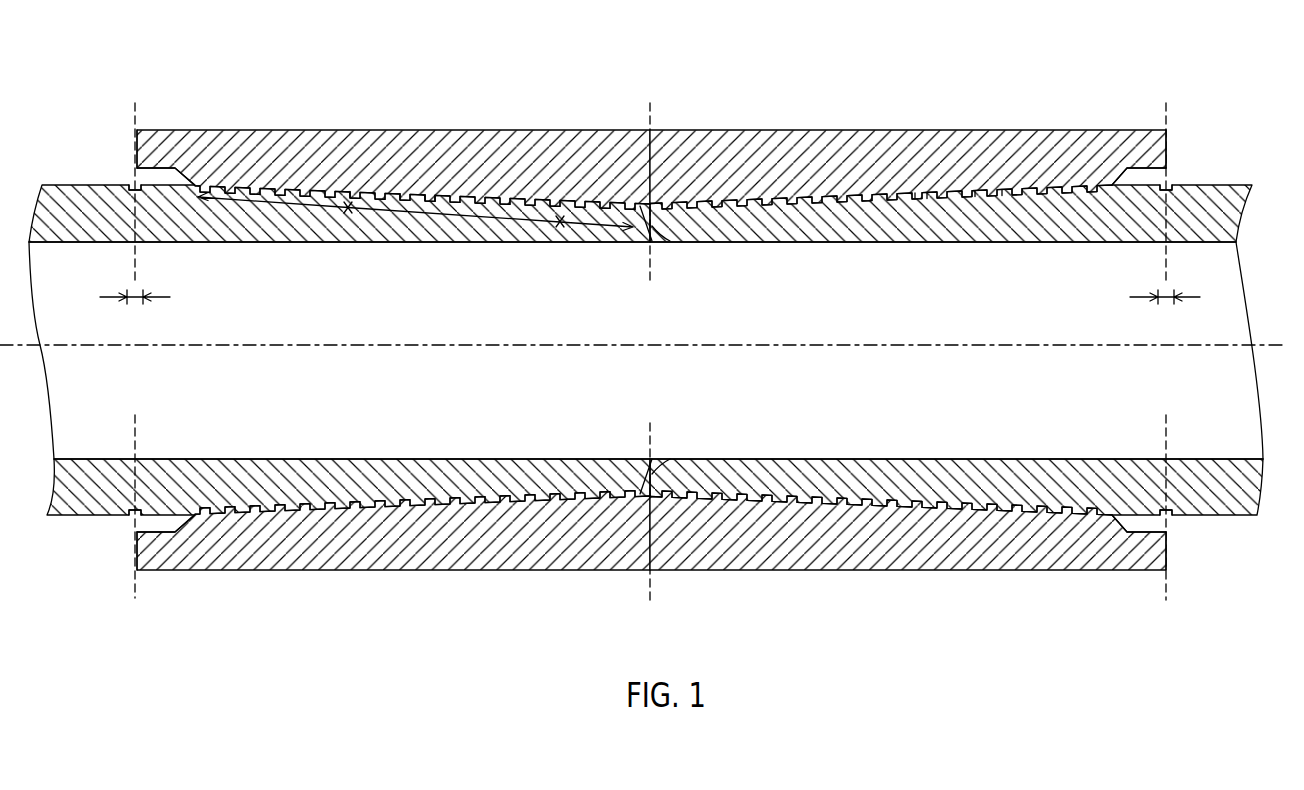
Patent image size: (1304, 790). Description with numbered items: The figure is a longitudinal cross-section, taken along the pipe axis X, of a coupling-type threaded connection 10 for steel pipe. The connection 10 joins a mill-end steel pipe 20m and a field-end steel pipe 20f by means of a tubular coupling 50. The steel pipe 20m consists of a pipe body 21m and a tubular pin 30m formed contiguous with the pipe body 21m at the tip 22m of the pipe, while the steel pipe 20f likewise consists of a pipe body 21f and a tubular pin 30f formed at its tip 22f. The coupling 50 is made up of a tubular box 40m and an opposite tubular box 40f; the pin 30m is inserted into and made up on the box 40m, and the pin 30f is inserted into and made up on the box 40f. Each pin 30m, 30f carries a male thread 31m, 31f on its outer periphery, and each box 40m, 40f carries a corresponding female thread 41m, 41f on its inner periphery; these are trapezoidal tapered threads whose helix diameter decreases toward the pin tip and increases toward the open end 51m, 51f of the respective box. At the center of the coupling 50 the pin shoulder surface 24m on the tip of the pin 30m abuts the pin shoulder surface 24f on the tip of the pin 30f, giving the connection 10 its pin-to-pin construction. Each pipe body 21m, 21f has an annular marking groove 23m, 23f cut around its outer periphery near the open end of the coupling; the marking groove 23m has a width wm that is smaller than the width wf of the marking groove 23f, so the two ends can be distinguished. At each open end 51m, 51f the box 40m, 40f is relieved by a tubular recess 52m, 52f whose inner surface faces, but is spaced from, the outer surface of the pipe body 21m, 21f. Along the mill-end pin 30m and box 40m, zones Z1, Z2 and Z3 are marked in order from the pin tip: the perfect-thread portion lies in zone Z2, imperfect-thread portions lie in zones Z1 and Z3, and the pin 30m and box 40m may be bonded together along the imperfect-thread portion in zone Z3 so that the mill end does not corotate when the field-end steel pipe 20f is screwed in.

The threaded connection 10 is at (650, 343).
The steel pipe 20m is at (360, 310).
The steel pipe 20f is at (947, 299).
The pipe body 21m is at (72, 222).
The pipe body 21f is at (1214, 222).
The tip of the steel pipe 22m is at (363, 412).
The tip of the steel pipe 22f is at (956, 412).
The marking groove 23m is at (133, 184).
The marking groove 23f is at (1172, 184).
The pin shoulder surface 24m is at (662, 236).
The pin shoulder surface 24f is at (640, 237).
The pin 30m is at (520, 243).
The pin 30f is at (950, 498).
The male thread 31m is at (413, 190).
The male thread 31f is at (1000, 190).
The box 40m is at (563, 148).
The box 40f is at (833, 140).
The female thread 41m is at (437, 201).
The female thread 41f is at (975, 197).
The coupling 50 is at (650, 343).
The open end of the box 51m is at (135, 163).
The open end of the box 51f is at (1170, 162).
The recess 52m is at (160, 176).
The recess 52f is at (1140, 176).
The zone Z1 is at (598, 229).
The zone Z2 is at (488, 220).
The zone Z3 is at (276, 207).
The width of the marking groove wm is at (135, 311).
The width of the marking groove wf is at (1165, 311).
The pipe axis X is at (650, 344).